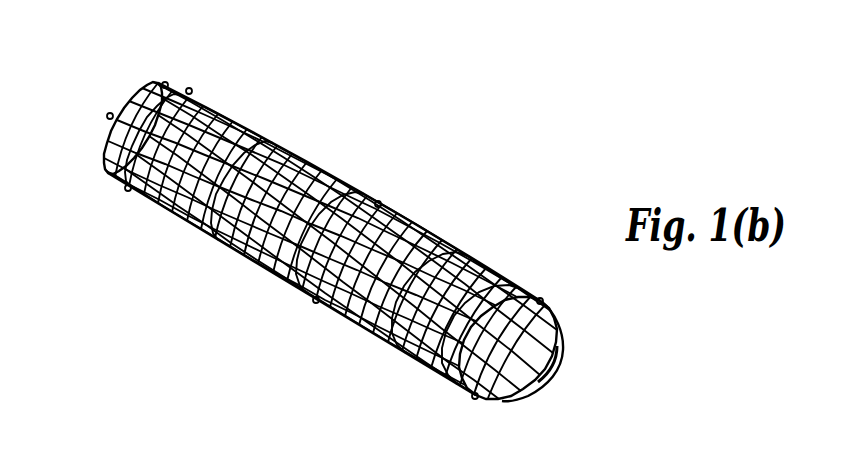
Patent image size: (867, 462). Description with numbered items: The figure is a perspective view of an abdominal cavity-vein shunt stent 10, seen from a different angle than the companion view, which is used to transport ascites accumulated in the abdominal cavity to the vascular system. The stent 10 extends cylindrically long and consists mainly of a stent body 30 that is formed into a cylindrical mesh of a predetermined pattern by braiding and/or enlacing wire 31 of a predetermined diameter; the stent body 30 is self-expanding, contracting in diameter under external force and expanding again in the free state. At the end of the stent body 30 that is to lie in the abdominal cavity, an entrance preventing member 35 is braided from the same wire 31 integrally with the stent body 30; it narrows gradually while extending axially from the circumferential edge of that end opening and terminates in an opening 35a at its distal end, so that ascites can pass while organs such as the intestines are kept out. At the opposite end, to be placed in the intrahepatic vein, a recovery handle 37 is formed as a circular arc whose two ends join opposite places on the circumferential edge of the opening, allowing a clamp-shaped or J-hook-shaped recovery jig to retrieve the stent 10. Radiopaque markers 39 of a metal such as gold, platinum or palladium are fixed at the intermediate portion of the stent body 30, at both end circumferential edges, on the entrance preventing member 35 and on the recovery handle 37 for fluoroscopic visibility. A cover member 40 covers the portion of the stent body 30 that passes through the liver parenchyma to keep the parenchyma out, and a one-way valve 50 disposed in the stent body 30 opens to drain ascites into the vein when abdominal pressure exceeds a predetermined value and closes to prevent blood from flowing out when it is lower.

The abdominal cavity-vein shunt stent 10 is at (447, 210).
The stent body 30 is at (154, 216).
The wire 31 is at (213, 107).
The entrance preventing member 35 is at (557, 344).
The opening 35a is at (544, 360).
The recovery handle 37 is at (124, 86).
The markers 39 is at (181, 82).
The cover member 40 is at (403, 320).
The one-way valve 50 is at (218, 206).